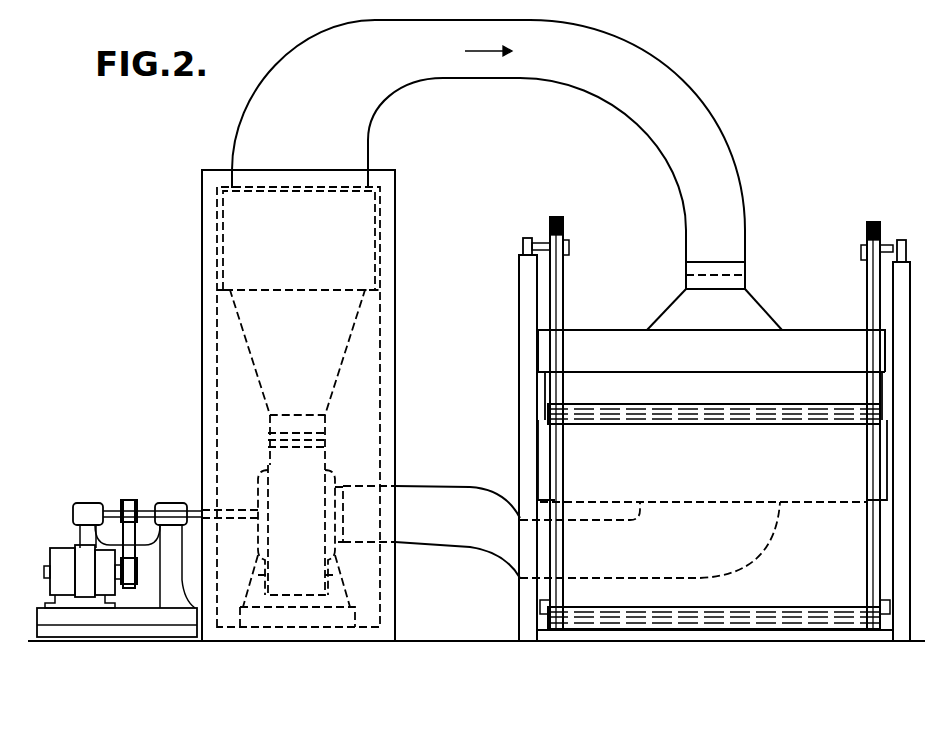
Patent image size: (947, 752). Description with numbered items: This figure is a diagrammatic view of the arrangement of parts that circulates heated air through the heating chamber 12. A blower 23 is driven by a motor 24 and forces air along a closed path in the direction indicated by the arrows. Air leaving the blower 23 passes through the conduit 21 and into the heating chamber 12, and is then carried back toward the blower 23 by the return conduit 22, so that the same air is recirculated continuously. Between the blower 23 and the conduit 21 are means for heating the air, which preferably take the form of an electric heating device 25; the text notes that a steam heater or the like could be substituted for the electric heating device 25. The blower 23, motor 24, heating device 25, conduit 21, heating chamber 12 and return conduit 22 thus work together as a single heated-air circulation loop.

The heating chamber 12 is at (813, 328).
The conduit 21 is at (718, 166).
The return conduit 22 is at (490, 578).
The blower 23 is at (317, 480).
The motor 24 is at (58, 553).
The electric heating device 25 is at (242, 241).